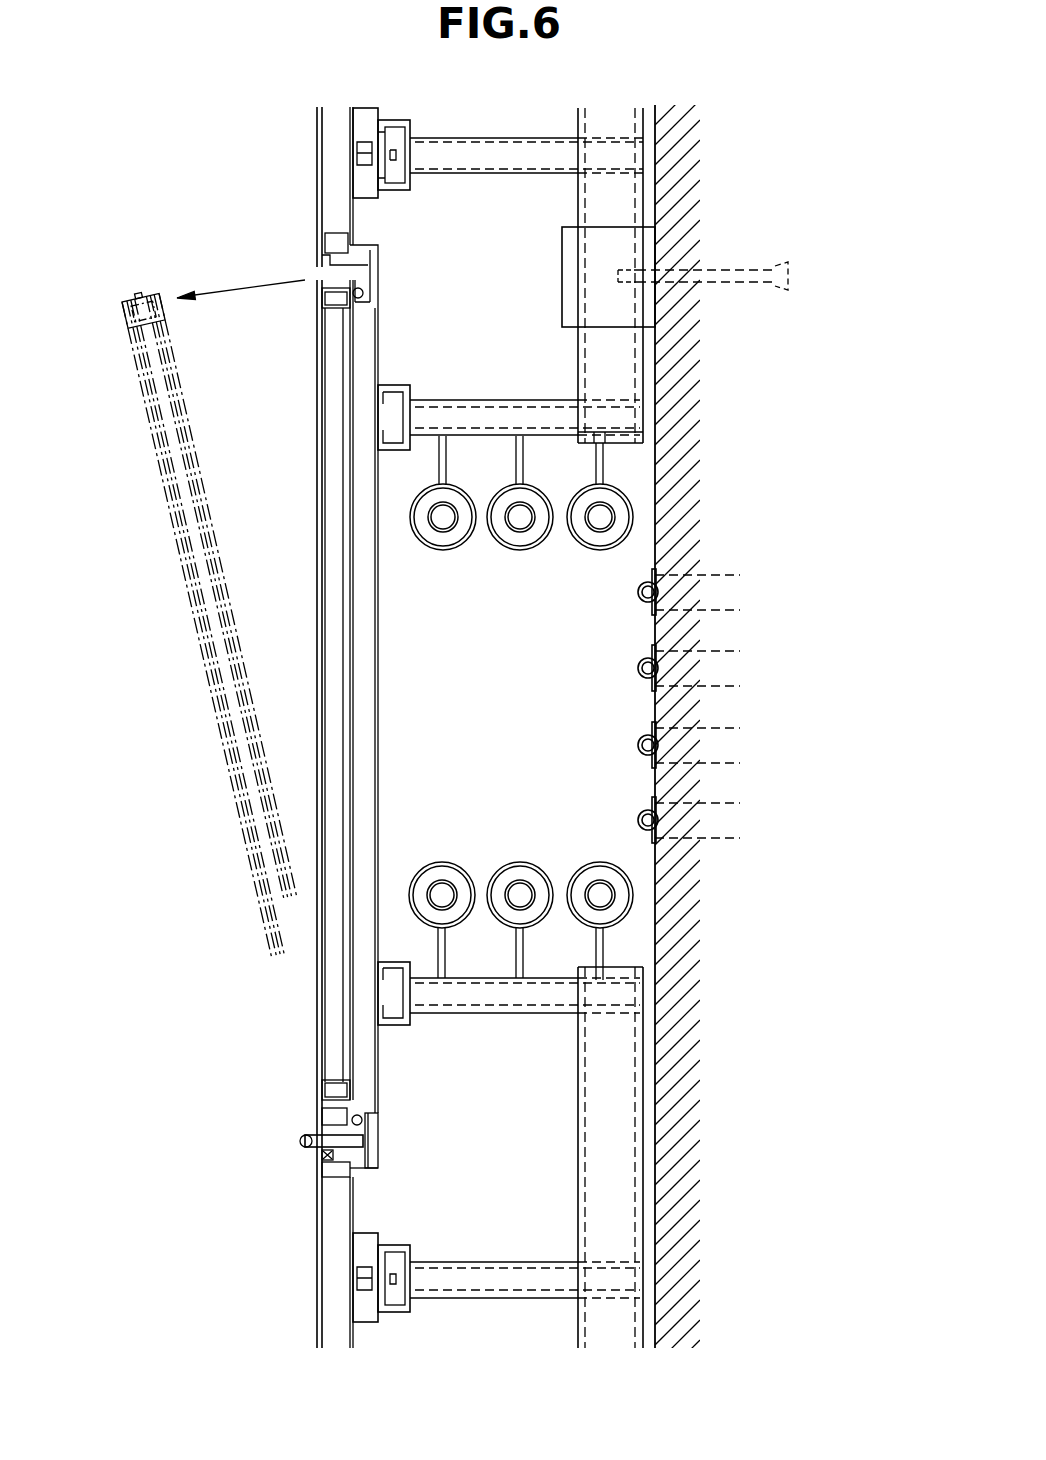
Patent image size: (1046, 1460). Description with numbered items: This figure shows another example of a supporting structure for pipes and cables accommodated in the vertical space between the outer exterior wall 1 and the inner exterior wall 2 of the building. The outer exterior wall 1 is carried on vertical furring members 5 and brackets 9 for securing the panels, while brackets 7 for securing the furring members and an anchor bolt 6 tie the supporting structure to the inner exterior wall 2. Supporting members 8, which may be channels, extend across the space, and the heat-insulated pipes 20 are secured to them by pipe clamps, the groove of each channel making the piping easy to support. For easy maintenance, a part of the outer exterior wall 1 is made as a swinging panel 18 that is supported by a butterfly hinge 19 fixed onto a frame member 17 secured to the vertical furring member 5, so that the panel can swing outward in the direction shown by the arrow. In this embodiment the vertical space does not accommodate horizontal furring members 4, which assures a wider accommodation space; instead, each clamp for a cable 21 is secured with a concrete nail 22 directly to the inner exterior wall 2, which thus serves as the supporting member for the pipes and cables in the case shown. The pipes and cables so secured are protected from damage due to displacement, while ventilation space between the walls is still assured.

The outer exterior wall 1 is at (330, 174).
The inner exterior wall 2 is at (695, 1253).
The horizontal furring member 4 is at (578, 356).
The vertical furring member 5 is at (410, 120).
The anchor bolt 6 is at (737, 285).
The bracket for securing the furring members 7 is at (562, 260).
The supporting member 8 is at (510, 137).
The bracket for securing a panel 9 is at (360, 190).
The frame member 17 is at (370, 1100).
The swinging panel 18 is at (207, 498).
The butterfly hinge 19 is at (300, 1140).
The heat-insulated pipes 20 is at (440, 532).
The cables 21 is at (640, 593).
The concrete nail 22 is at (712, 850).